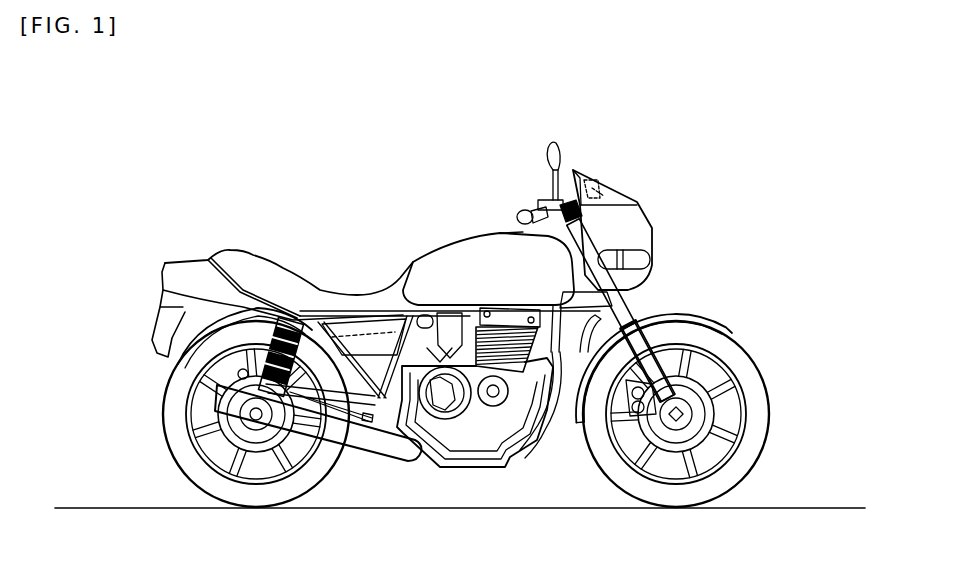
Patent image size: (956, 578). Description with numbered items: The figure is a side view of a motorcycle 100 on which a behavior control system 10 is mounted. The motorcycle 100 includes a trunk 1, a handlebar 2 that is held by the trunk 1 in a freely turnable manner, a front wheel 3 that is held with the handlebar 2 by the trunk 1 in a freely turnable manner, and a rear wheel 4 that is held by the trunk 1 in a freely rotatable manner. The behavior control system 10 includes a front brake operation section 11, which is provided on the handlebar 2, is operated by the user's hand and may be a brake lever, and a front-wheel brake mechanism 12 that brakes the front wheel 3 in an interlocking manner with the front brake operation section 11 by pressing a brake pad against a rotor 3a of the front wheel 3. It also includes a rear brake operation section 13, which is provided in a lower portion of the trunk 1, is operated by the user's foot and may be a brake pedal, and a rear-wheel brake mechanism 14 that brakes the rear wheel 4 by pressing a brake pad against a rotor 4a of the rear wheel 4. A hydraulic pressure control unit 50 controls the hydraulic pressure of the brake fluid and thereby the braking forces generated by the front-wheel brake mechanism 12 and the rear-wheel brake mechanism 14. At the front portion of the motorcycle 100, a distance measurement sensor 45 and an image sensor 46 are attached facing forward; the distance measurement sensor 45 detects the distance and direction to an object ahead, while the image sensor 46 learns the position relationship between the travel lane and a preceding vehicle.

The motorcycle 100 is at (746, 110).
The trunk 1 is at (352, 296).
The hydraulic pressure control unit 50 is at (381, 312).
The handlebar 2 is at (528, 206).
The behavior control system 10 is at (680, 284).
The front brake operation section 11 is at (576, 170).
The image sensor 46 is at (594, 180).
The distance measurement sensor 45 is at (604, 192).
The front wheel 3 is at (765, 468).
The rotor 3a is at (702, 405).
The front-wheel brake mechanism 12 is at (700, 367).
The rear wheel 4 is at (166, 459).
The rotor 4a is at (230, 420).
The rear-wheel brake mechanism 14 is at (217, 368).
The rear brake operation section 13 is at (404, 440).